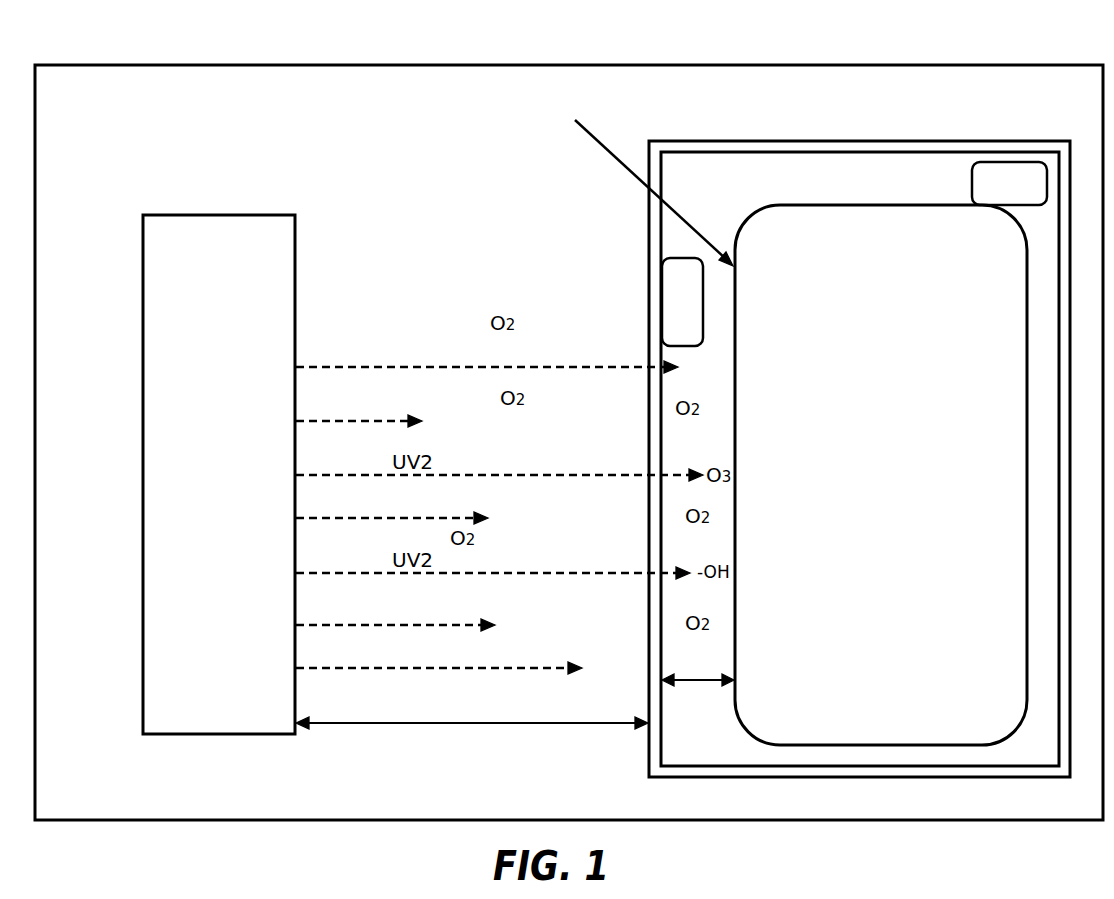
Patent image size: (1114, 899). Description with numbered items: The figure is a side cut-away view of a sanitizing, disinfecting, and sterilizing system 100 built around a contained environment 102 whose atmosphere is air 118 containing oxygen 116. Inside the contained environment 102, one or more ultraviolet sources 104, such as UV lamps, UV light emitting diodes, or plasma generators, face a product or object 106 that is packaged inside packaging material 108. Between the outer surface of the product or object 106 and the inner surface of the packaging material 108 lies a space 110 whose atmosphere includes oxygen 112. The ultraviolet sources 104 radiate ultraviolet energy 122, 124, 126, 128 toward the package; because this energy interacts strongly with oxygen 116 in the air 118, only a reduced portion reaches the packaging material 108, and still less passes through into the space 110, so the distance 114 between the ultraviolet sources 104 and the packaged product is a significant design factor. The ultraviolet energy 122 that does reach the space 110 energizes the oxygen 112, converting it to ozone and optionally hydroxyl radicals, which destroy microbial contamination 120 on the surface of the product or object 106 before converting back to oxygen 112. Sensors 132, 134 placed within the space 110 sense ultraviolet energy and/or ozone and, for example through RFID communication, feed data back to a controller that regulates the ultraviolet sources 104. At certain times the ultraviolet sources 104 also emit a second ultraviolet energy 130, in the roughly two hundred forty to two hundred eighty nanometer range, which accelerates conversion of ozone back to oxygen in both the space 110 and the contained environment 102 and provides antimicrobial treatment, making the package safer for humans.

The sanitizing, disinfecting, and sterilizing system 100 is at (94, 41).
The contained environment 102 is at (228, 65).
The ultraviolet sources 104 is at (173, 215).
The product or object 106 is at (940, 205).
The packaging material 108 is at (918, 140).
The space 110 is at (683, 685).
The oxygen 112 is at (736, 177).
The distance 114 is at (393, 727).
The oxygen 116 is at (434, 273).
The air 118 is at (443, 170).
The microbial contamination 120 is at (633, 180).
The ultraviolet energy 122 is at (358, 340).
The ultraviolet energy 124 is at (368, 407).
The ultraviolet energy 126 is at (368, 508).
The ultraviolet energy 128 is at (368, 605).
The second ultraviolet energy 130 is at (445, 657).
The sensor 132 is at (682, 257).
The sensor 134 is at (1015, 170).